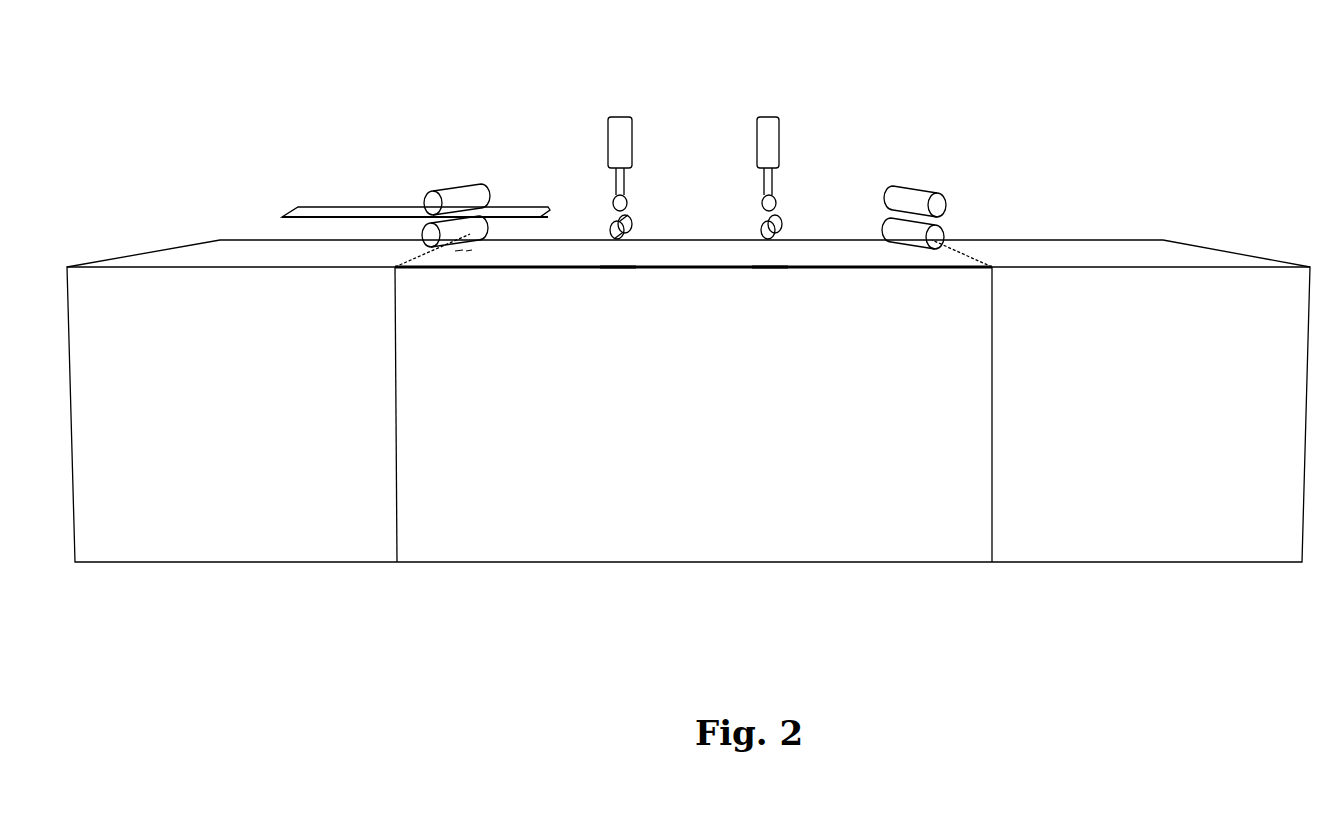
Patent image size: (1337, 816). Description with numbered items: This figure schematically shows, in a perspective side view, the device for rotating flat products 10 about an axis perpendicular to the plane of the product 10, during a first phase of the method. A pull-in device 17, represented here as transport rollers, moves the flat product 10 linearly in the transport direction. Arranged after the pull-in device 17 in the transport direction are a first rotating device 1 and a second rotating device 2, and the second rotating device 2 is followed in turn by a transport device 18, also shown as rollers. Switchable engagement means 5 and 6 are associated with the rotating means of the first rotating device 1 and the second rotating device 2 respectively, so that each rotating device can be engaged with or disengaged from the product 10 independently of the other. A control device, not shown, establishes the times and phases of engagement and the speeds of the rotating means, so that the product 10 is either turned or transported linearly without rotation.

The first rotating device 1 is at (616, 276).
The second rotating device 2 is at (769, 276).
The switchable engagement means 5 is at (622, 117).
The switchable engagement means 6 is at (768, 117).
The flat product 10 is at (357, 207).
The pull-in device 17 is at (460, 165).
The transport device 18 is at (921, 165).